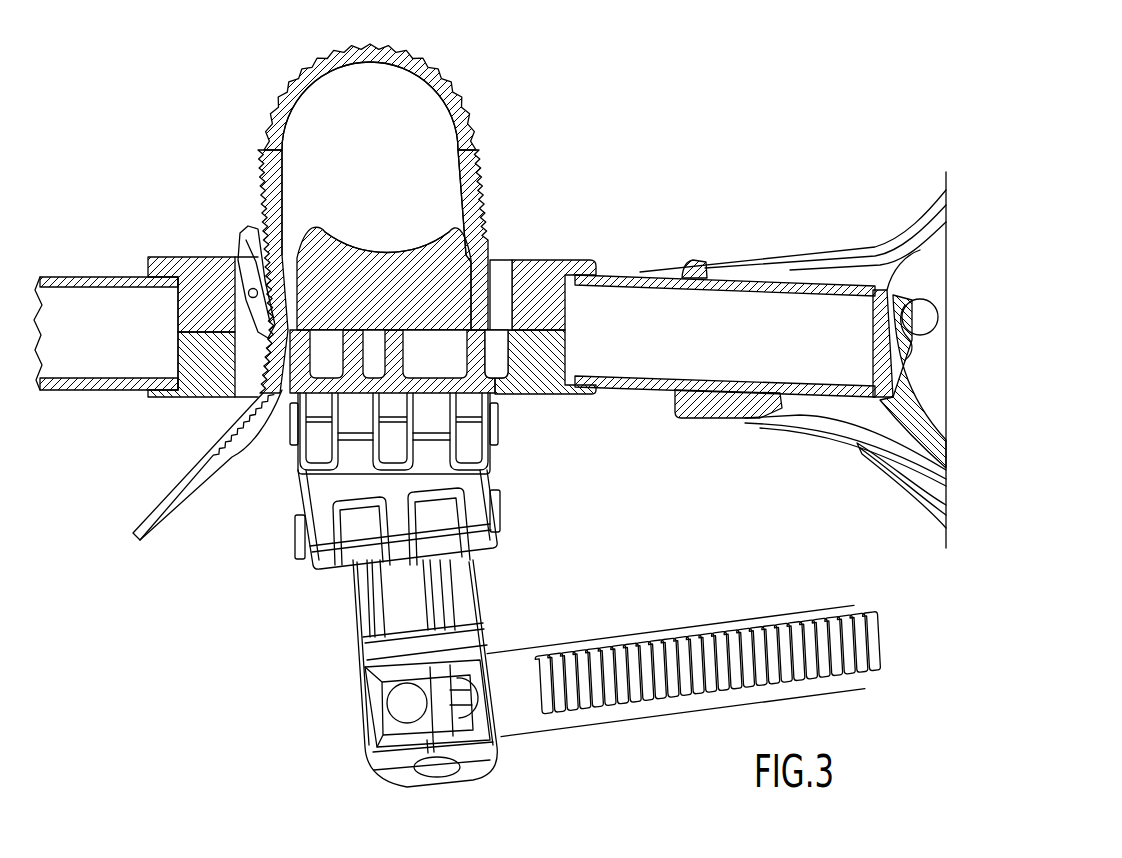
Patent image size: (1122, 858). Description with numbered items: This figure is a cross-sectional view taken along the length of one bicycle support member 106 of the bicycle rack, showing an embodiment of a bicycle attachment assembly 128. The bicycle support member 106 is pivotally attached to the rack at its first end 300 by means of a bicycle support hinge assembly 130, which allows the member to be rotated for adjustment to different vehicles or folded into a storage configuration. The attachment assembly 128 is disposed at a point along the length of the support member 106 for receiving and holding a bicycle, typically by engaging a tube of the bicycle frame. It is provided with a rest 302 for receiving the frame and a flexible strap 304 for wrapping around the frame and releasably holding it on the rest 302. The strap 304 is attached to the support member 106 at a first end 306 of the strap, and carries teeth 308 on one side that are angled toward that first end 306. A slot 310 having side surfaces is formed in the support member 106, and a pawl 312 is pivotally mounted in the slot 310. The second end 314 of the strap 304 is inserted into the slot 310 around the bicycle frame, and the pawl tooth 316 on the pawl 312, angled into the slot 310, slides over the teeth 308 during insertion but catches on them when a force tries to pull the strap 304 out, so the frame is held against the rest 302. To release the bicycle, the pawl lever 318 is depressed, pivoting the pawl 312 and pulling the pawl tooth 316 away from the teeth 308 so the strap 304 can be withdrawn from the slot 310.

The bicycle support member 106 is at (92, 276).
The bicycle attachment assembly 128 is at (489, 146).
The bicycle support hinge assembly 130 is at (883, 244).
The first end 300 is at (649, 272).
The rest 302 is at (399, 287).
The flexible strap 304 is at (461, 92).
The first end of the strap 306 is at (487, 325).
The teeth 308 is at (438, 78).
The slot 310 is at (252, 378).
The pawl 312 is at (233, 266).
The second end of the strap 314 is at (186, 496).
The pawl tooth 316 is at (430, 248).
The pawl lever 318 is at (247, 232).